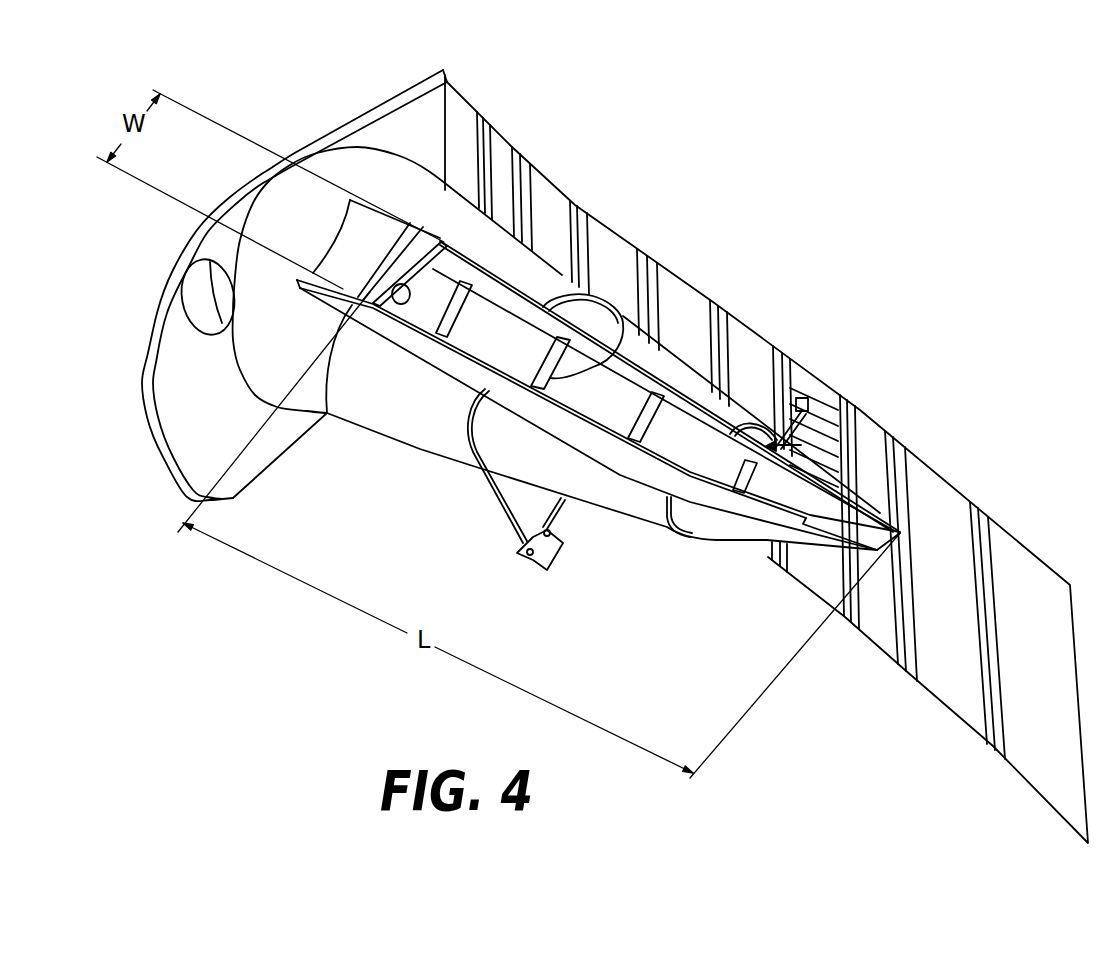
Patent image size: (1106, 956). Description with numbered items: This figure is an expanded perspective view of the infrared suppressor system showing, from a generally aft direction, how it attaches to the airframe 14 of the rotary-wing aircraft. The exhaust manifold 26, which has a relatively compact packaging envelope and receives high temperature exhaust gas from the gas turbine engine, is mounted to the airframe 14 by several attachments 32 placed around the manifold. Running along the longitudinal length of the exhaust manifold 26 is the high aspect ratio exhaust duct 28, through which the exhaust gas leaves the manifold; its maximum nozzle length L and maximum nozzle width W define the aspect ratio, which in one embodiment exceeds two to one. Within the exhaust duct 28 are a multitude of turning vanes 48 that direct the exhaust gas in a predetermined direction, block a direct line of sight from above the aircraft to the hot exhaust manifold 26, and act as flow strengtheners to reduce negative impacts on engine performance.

The airframe 14 is at (753, 347).
The exhaust manifold 26 is at (597, 323).
The high aspect ratio exhaust duct 28 is at (483, 320).
The attachments 32 is at (380, 141).
The turning vanes 48 is at (553, 378).